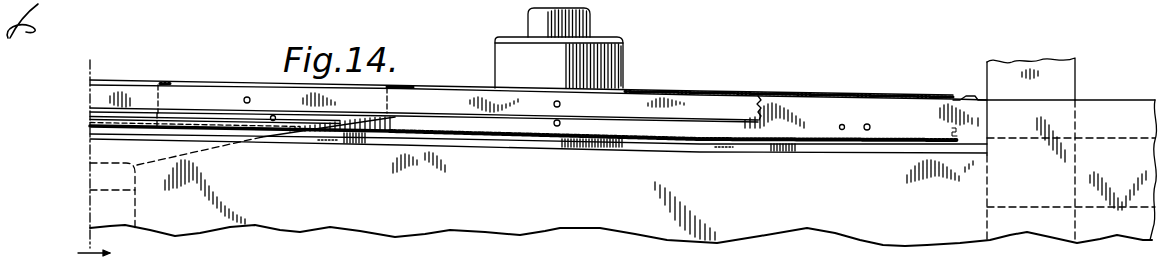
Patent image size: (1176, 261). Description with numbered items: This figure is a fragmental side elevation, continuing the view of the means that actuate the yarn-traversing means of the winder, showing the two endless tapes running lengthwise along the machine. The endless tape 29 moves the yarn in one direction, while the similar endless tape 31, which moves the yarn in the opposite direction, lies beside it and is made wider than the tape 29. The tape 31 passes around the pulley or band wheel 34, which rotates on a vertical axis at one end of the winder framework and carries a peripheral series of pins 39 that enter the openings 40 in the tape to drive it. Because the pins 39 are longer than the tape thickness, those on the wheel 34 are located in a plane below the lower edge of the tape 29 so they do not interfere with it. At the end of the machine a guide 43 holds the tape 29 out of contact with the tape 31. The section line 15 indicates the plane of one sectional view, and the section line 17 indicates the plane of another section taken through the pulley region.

The section line 15— 15 is at (94, 147).
The section line 17— 17 is at (562, 78).
The endless tape 29 is at (712, 103).
The endless tape 31 is at (838, 100).
The pulley or band wheel 34 is at (782, 96).
The pins 39 is at (555, 126).
The openings 40 is at (867, 124).
The guides 43 is at (92, 117).